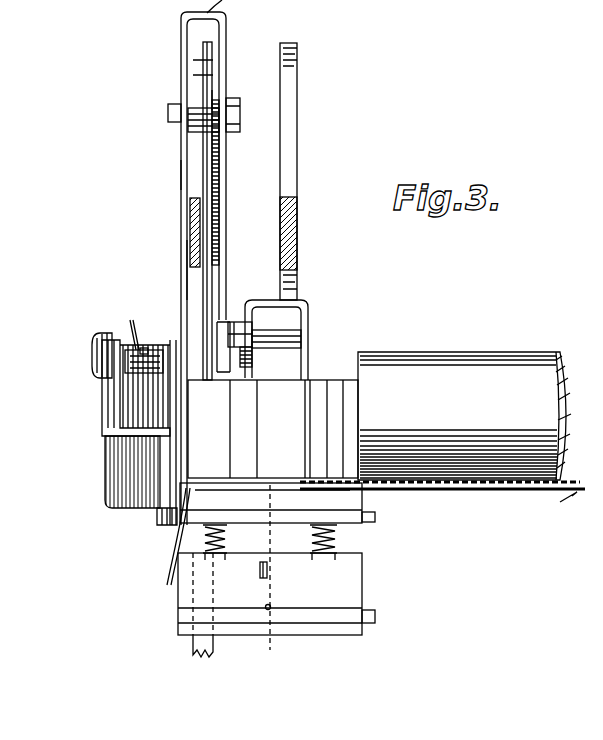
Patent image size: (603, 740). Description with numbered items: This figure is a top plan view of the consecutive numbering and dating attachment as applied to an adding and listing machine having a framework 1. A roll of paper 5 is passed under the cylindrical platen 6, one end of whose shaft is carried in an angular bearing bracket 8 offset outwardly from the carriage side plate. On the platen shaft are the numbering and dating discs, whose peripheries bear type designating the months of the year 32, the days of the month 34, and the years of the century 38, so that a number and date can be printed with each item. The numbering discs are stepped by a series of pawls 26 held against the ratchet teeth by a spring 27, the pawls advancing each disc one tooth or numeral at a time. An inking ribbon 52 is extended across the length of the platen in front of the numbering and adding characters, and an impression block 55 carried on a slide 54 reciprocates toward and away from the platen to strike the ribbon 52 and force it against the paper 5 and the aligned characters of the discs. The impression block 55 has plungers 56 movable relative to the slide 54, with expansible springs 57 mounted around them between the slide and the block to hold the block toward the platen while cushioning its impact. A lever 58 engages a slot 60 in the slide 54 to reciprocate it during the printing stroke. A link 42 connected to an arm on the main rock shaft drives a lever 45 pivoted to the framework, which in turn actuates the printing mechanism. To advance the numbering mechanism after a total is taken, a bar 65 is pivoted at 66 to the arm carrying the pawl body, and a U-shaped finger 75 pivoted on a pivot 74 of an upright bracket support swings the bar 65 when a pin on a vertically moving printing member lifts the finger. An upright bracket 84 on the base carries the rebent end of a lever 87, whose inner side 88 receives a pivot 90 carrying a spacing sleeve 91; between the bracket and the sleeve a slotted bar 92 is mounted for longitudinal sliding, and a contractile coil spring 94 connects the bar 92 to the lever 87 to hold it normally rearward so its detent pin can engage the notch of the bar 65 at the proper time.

The framework 1 is at (309, 220).
The roll of paper 5 is at (563, 488).
The cylindrical platen 6 is at (467, 366).
The angular bearing bracket 8 is at (105, 465).
The pawls 26 is at (132, 322).
The spring 27 is at (146, 351).
The month designations 32 is at (180, 510).
The day-of-month type 34 is at (253, 478).
The year type 38 is at (283, 378).
The link 42 is at (188, 277).
The lever 45 is at (192, 213).
The ribbon 52 is at (445, 492).
The slide 54 is at (350, 585).
The impression block 55 is at (272, 498).
The plungers 56 is at (218, 554).
The expansible springs 57 is at (310, 540).
The lever 58 is at (268, 572).
The slot 60 is at (254, 597).
The bar 65 is at (103, 393).
The pivot 66 is at (92, 352).
The pivot 74 is at (263, 333).
The finger 75 is at (253, 299).
The upright bracket 84 is at (210, 100).
The lever 87 is at (182, 172).
The inner side 88 is at (222, 175).
The pivot 90 is at (172, 121).
The spacing sleeve 91 is at (205, 80).
The bar 92 is at (207, 52).
The contractile coil spring 94 is at (247, 320).